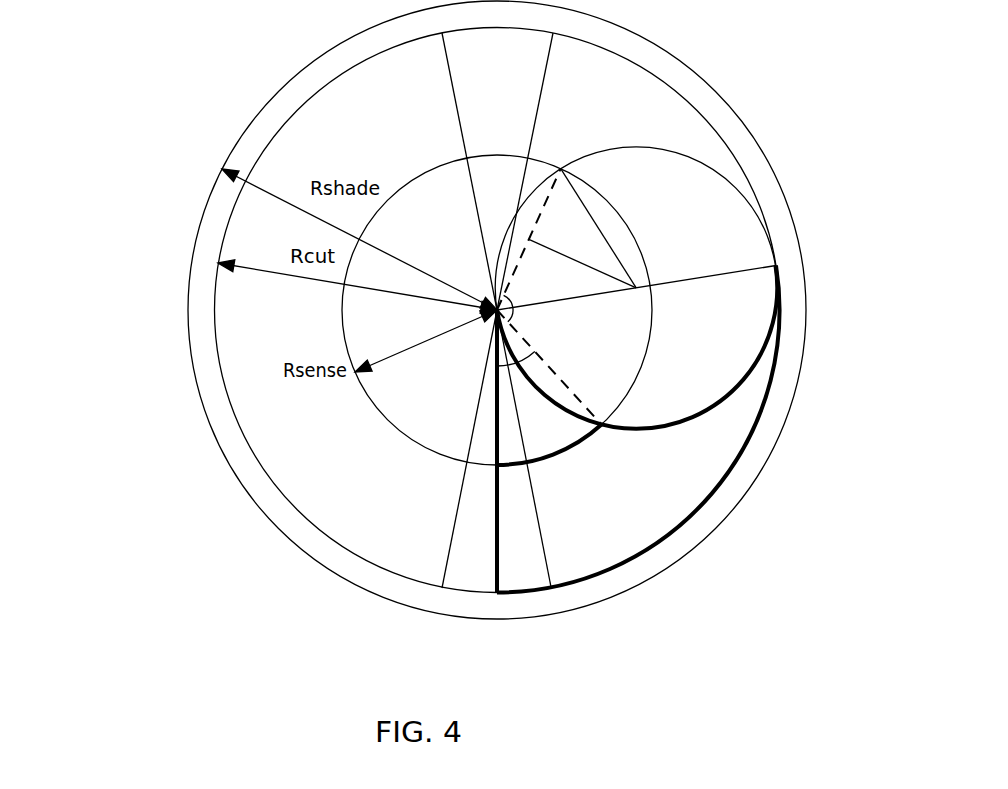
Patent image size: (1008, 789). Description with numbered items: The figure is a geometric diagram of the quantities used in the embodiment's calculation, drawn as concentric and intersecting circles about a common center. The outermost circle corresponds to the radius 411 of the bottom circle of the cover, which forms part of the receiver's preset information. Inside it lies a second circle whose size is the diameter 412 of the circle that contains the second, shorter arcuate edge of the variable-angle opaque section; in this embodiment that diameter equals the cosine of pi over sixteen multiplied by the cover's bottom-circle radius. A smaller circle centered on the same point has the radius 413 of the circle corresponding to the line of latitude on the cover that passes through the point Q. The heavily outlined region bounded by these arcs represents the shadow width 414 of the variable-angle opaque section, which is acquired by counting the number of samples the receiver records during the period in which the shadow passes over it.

The radius of the bottom circle of the cover 411 is at (223, 172).
The diameter of a circle containing the second arcuate edge of the variable-angle op 412 is at (220, 265).
The radius of a circle corresponding to a line of latitude passing point Q 413 is at (349, 356).
The shadow width of the variable-angle opaque section 414 is at (580, 441).